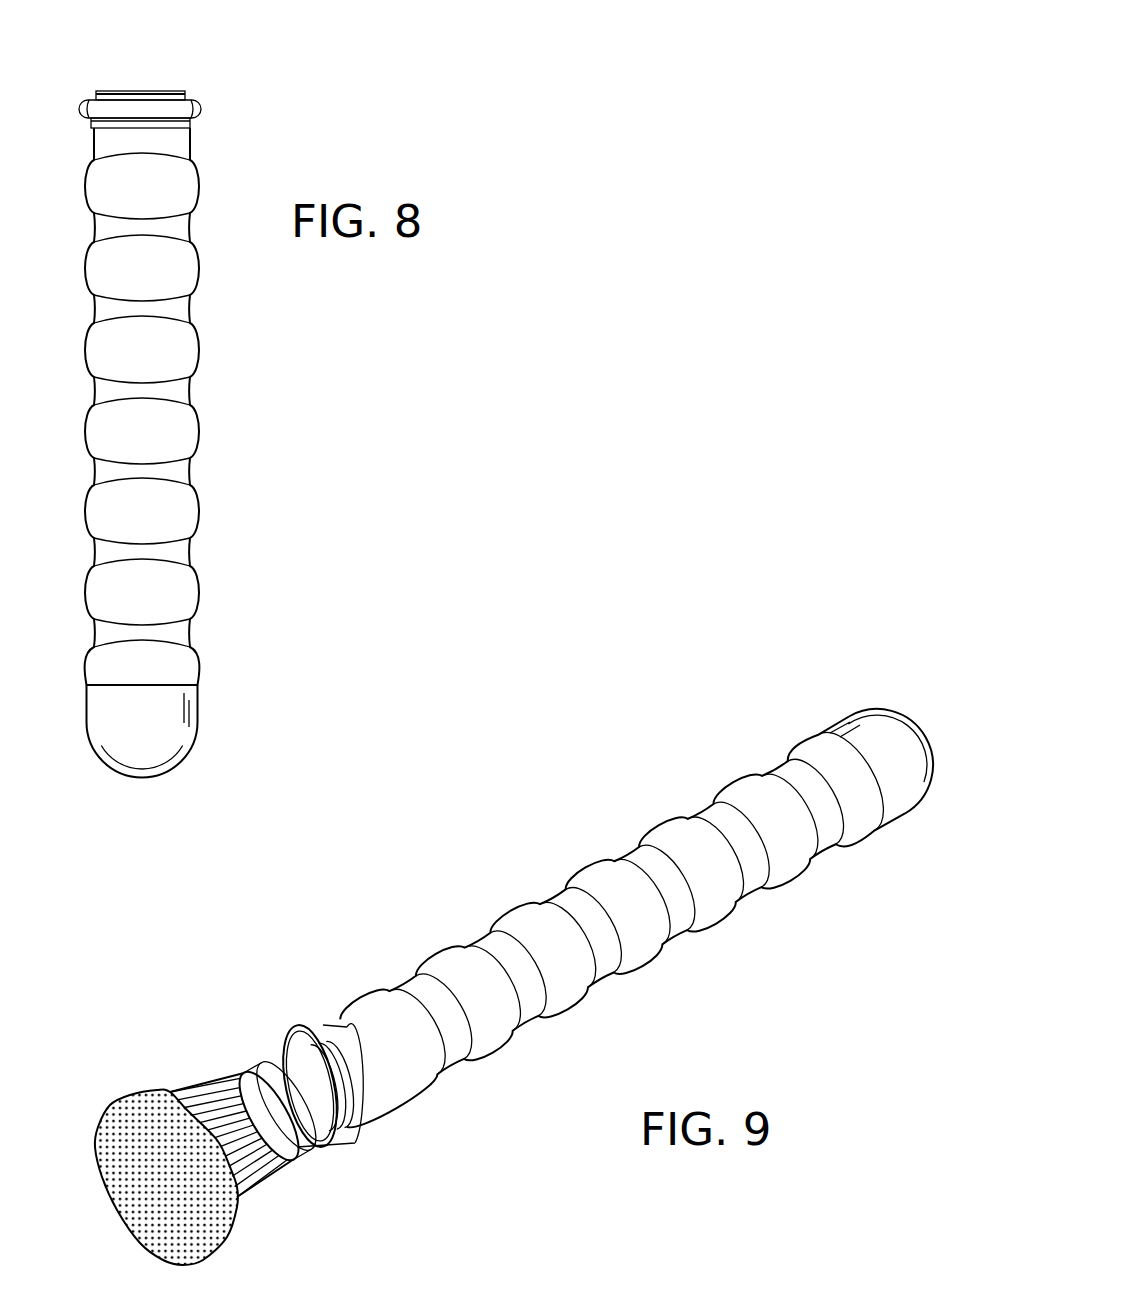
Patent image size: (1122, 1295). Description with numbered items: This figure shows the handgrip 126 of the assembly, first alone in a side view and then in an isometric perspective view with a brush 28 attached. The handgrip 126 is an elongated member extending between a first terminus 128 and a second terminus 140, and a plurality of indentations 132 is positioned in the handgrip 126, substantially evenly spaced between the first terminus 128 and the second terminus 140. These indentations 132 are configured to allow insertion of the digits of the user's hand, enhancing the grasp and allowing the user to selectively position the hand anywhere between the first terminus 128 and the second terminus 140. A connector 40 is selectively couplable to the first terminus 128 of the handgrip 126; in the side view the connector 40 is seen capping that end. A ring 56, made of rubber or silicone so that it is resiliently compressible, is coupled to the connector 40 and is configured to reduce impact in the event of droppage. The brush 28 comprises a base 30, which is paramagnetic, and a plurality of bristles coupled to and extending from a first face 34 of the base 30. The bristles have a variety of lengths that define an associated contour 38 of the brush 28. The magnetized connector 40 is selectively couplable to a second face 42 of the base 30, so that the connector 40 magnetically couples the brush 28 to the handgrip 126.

In FIG. 8, the connector 40 is at (167, 104).
In FIG. 8, the first terminus 128 is at (126, 122).
In FIG. 8, the handgrip 126 is at (86, 351).
In FIG. 9, the handgrip 126 is at (594, 878).
In FIG. 8, the indentations 132 is at (198, 231).
In FIG. 9, the indentations 132 is at (674, 946).
In FIG. 8, the second terminus 140 is at (145, 779).
In FIG. 9, the ring 56 is at (280, 1031).
In FIG. 9, the second face 42 is at (325, 1110).
In FIG. 9, the base 30 is at (250, 1081).
In FIG. 9, the first face 34 is at (246, 1103).
In FIG. 9, the brush 28 is at (252, 1202).
In FIG. 9, the contour 38 is at (154, 1202).